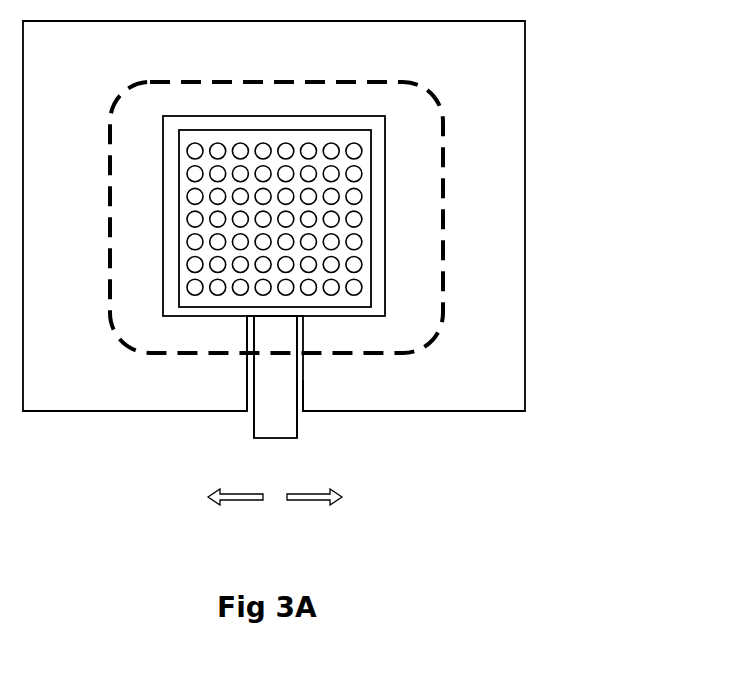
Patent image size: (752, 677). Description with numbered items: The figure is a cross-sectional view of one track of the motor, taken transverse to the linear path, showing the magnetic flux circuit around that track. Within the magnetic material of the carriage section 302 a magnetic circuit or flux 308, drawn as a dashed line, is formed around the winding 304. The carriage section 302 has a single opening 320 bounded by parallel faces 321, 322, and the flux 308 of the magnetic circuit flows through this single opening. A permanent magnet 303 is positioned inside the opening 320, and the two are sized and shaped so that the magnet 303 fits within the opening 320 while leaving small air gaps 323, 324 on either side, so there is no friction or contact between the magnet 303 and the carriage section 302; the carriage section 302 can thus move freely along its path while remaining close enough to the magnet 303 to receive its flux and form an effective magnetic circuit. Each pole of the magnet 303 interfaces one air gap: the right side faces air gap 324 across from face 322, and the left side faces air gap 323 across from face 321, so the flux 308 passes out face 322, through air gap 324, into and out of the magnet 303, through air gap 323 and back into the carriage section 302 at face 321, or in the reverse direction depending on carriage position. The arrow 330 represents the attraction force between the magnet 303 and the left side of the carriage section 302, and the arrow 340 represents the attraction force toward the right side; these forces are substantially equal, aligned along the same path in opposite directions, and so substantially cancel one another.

The carriage section 302 is at (475, 120).
The magnetic flux 308 is at (443, 160).
The winding 304 is at (372, 222).
The permanent magnet 303 is at (273, 440).
The face 321 is at (247, 368).
The opening 320 is at (254, 378).
The air gap 323 is at (247, 415).
The air gap 324 is at (302, 415).
The face 322 is at (298, 374).
The arrow 330 is at (237, 498).
The arrow 340 is at (332, 502).